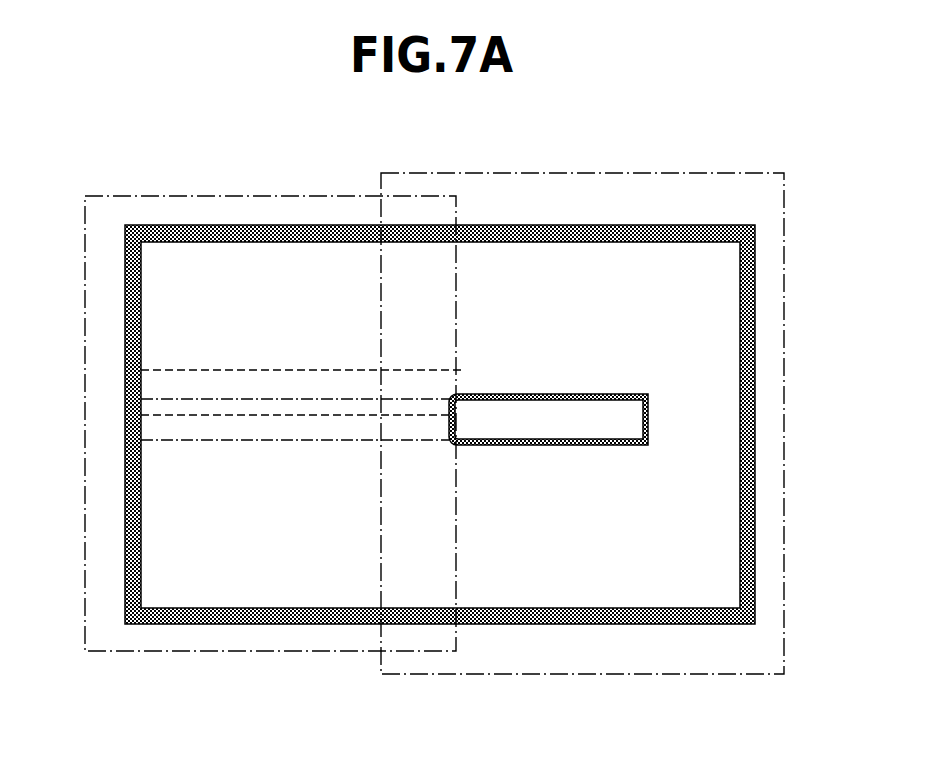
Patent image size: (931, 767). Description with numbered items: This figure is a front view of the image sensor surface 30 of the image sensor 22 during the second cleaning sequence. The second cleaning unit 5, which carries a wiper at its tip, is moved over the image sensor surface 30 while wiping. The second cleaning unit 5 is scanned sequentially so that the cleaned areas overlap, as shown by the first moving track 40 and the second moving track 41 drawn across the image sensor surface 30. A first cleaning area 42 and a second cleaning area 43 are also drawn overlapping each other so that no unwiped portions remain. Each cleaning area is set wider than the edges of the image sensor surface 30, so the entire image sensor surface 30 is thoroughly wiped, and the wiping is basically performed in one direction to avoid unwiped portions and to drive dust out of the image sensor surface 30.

The second cleaning unit 5 is at (628, 393).
The image sensor 22 is at (675, 226).
The image sensor surface 30 is at (720, 547).
The first moving track 40 is at (192, 370).
The second moving track 41 is at (203, 440).
The first cleaning area 42 is at (218, 196).
The second cleaning area 43 is at (472, 173).